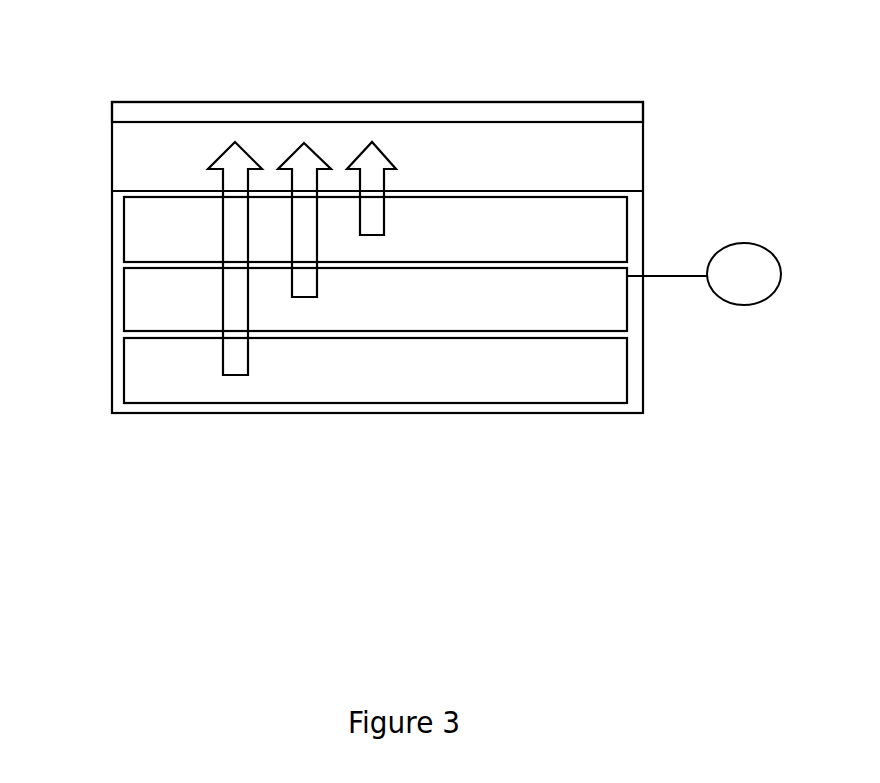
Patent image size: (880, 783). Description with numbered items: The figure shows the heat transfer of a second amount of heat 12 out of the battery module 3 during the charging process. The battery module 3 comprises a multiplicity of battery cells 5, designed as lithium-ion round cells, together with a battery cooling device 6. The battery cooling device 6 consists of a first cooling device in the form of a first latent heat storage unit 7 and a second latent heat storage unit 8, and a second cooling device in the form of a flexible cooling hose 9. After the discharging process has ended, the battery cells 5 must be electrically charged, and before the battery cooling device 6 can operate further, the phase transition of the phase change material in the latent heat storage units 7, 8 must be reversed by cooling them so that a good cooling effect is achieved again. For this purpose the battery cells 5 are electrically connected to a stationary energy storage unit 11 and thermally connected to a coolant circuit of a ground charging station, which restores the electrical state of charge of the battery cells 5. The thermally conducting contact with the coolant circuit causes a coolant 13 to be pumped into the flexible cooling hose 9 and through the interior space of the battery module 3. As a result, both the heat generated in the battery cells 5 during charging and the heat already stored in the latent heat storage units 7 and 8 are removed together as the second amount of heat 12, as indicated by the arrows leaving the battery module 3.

The battery module 3 is at (211, 101).
The battery cells 5 is at (629, 297).
The battery cooling device 6 is at (99, 247).
The first latent heat storage unit 7 is at (628, 223).
The second latent heat storage unit 8 is at (628, 376).
The flexible cooling hose 9 is at (378, 122).
The stationary energy storage unit 11 is at (745, 243).
The second amount of heat 12 is at (368, 240).
The coolant 13 is at (112, 158).